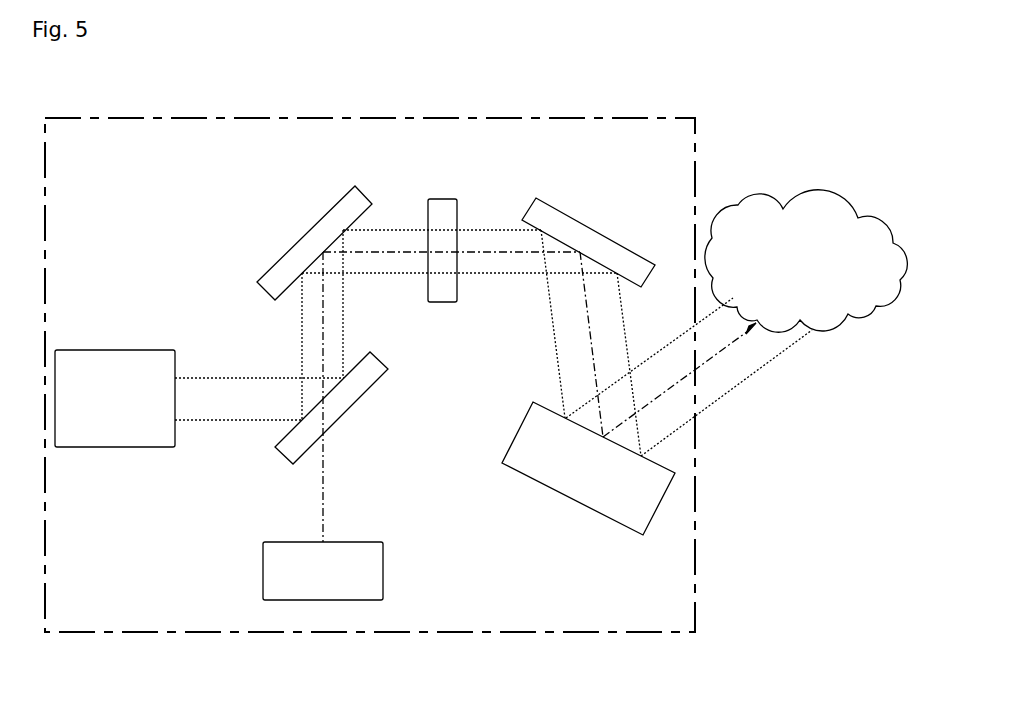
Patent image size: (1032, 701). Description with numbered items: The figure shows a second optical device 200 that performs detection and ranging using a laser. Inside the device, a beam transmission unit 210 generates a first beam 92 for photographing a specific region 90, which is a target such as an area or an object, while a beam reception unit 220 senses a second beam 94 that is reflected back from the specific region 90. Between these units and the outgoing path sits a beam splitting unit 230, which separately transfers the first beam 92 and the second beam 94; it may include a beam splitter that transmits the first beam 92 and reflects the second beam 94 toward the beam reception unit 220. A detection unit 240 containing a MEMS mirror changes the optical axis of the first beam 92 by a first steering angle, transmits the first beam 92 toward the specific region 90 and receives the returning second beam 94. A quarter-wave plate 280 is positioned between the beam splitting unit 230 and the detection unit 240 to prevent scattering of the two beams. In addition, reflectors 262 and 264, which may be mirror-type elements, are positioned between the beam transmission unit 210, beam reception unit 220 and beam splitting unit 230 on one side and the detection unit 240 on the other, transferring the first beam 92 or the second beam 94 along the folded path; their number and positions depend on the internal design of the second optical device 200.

The second optical device 200 is at (695, 597).
The beam transmission unit 210 is at (383, 566).
The beam reception unit 220 is at (157, 350).
The beam splitting unit 230 is at (343, 416).
The detection unit 240 is at (657, 508).
The reflector 262 is at (308, 230).
The reflector 264 is at (597, 231).
The quarter-wave plate 280 is at (437, 199).
The specific region 90 is at (803, 193).
The first beam 92 is at (323, 492).
The second beam 94 is at (767, 366).